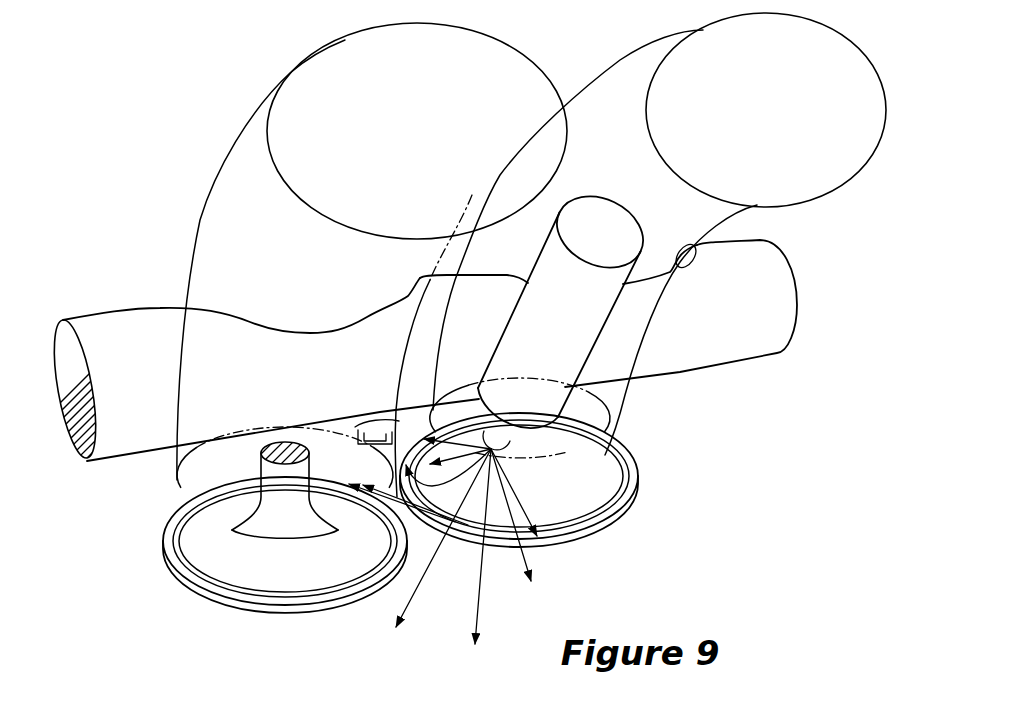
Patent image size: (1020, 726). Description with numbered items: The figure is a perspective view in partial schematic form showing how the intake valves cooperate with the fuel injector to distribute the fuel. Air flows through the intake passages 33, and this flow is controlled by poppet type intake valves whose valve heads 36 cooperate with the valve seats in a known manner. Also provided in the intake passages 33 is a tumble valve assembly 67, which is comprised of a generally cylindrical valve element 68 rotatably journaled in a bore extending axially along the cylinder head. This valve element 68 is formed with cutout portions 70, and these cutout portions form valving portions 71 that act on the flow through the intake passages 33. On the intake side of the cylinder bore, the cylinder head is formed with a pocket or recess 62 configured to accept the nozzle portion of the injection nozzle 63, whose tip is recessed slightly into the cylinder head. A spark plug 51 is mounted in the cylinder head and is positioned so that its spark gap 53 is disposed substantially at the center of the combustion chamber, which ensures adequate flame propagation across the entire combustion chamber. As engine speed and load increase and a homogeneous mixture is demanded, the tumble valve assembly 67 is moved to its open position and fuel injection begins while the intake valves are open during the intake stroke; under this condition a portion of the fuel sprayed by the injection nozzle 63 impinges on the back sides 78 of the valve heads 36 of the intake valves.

The intake passage 33 is at (222, 158).
The valve element 68 is at (157, 310).
The cutout portion 70 is at (270, 354).
The valving portion 71 is at (338, 330).
The tumble valve assembly 67 is at (690, 343).
The injection nozzle 63 is at (598, 193).
The recess 62 is at (536, 446).
The spark plug 51 is at (372, 420).
The spark gap 53 is at (340, 445).
The valve head 36 is at (650, 516).
The back side 78 is at (645, 465).